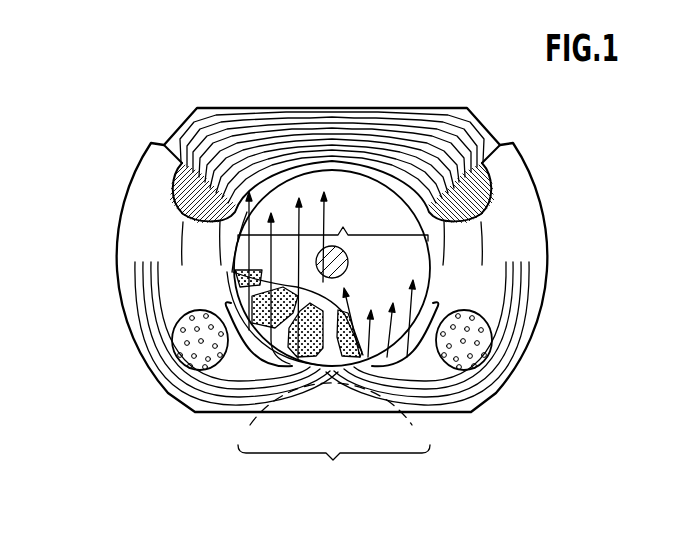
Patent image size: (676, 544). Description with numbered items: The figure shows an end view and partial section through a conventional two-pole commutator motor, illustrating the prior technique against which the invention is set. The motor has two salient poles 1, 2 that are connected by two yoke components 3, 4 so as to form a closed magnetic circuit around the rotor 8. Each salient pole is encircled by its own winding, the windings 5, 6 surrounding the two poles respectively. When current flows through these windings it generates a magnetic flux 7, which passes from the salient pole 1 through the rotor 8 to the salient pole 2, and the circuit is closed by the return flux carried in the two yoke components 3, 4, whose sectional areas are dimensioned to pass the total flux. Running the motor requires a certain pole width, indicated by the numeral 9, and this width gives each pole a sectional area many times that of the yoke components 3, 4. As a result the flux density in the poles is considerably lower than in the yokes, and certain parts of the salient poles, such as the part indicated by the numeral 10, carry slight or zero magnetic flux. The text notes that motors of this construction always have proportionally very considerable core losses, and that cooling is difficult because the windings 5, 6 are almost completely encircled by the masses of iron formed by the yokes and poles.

The salient pole 1 is at (393, 363).
The salient pole 2 is at (288, 171).
The yoke component 3 is at (515, 302).
The yoke component 4 is at (152, 315).
The winding 5 is at (207, 353).
The winding 6 is at (415, 146).
The magnetic flux 7 is at (343, 226).
The rotor 8 is at (387, 275).
The pole width 9 is at (334, 471).
The part of salient pole with slight or zero flux 10 is at (334, 402).